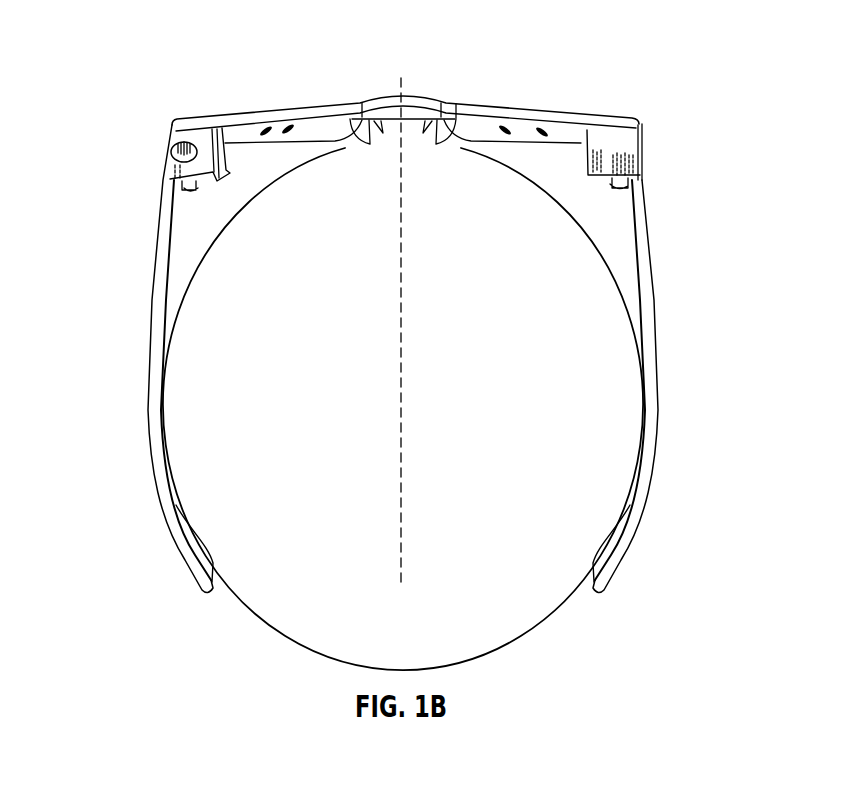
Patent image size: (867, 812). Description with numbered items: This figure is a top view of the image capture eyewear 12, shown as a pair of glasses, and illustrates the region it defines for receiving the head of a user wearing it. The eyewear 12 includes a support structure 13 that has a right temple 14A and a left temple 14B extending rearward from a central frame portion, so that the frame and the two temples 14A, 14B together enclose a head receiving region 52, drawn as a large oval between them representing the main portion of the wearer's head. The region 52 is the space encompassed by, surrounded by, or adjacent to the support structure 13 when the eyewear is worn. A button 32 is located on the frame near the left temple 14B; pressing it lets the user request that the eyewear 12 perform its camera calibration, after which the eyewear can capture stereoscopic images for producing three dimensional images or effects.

The image capture eyewear 12 is at (310, 102).
The support structure 13 is at (608, 60).
The button 32 is at (162, 150).
The temple 14B is at (136, 307).
The temple 14A is at (669, 307).
The head receiving region 52 is at (548, 633).